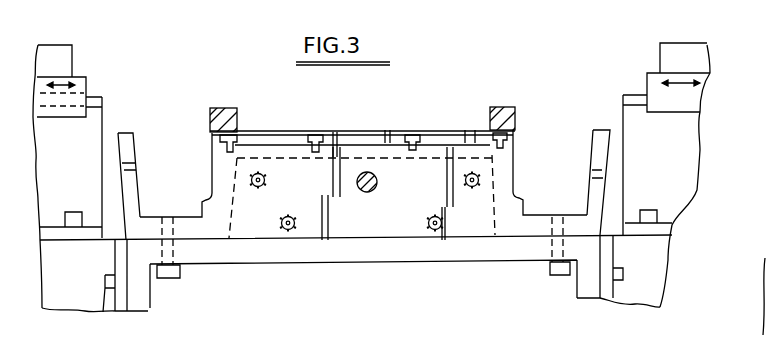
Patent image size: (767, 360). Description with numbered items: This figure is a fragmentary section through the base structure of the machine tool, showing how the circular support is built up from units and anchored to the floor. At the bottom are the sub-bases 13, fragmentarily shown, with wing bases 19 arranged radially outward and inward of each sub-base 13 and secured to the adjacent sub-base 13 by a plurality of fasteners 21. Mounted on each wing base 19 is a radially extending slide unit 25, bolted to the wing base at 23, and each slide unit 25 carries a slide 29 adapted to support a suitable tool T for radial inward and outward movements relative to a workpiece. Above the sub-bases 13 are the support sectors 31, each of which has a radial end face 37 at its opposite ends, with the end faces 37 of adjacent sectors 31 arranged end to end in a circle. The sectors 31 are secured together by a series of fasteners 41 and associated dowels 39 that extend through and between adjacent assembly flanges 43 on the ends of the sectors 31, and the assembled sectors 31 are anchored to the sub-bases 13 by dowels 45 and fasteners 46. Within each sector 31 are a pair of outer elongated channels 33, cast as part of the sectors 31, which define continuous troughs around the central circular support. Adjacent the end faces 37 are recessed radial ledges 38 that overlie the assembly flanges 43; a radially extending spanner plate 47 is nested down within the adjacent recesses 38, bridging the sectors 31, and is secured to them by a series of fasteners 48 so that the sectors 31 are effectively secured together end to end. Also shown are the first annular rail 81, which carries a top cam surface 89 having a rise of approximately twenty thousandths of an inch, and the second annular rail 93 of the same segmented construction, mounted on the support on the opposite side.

The tool T is at (65, 59).
The slide 29 is at (75, 78).
The slide unit 25 is at (90, 135).
The bolt 23 is at (77, 212).
The outer elongated channel 33 is at (177, 148).
The support sector 31 is at (212, 174).
The sub-base 13 is at (145, 305).
The wing base 19 is at (73, 297).
The fastener 21 is at (112, 290).
The dowel 45 is at (170, 230).
The fastener 46 is at (557, 272).
The radial end face 37 is at (222, 228).
The recessed radial ledge 38 is at (442, 142).
The spanner plate 47 is at (365, 137).
The fastener 48 is at (315, 130).
The assembly flange 43 is at (348, 225).
The dowel 39 is at (375, 185).
The fastener 41 is at (440, 230).
The second annular rail 93 is at (227, 107).
The first annular rail 81 is at (508, 105).
The top cam surface 89 is at (747, 281).